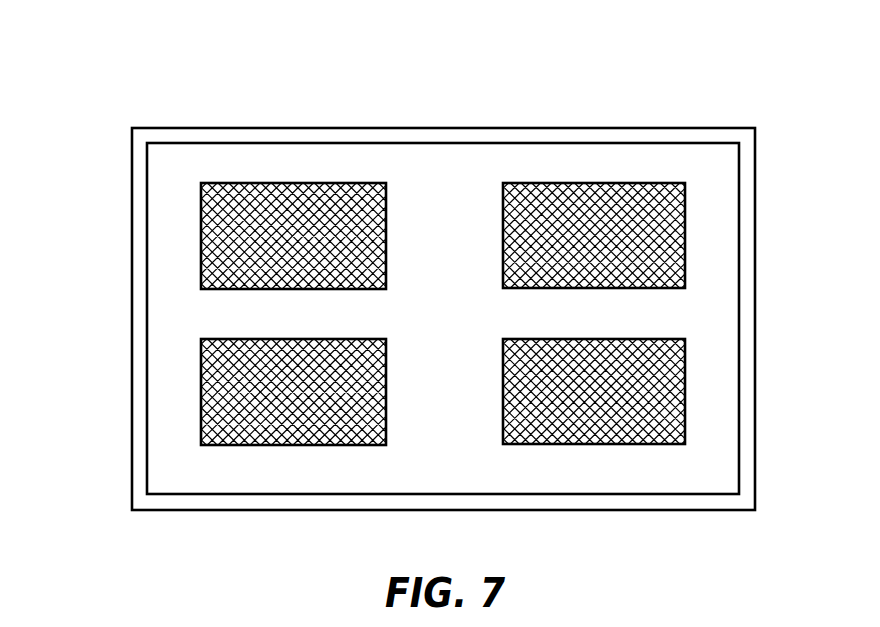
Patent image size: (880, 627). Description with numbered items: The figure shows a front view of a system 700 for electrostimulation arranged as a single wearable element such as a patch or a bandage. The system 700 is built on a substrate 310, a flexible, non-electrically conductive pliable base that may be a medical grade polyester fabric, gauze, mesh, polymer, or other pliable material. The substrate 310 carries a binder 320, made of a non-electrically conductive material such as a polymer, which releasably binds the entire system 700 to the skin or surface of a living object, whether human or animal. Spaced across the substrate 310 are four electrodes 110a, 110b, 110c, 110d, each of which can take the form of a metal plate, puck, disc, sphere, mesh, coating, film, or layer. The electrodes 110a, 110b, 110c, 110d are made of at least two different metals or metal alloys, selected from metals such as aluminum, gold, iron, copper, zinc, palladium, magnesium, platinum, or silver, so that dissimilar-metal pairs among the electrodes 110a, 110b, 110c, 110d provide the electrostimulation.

The system for electrostimulation 700 is at (136, 42).
The substrate 310 is at (703, 133).
The binder 320 is at (454, 205).
The electrode 110a is at (213, 254).
The electrode 110b is at (213, 406).
The electrode 110c is at (672, 233).
The electrode 110d is at (672, 397).